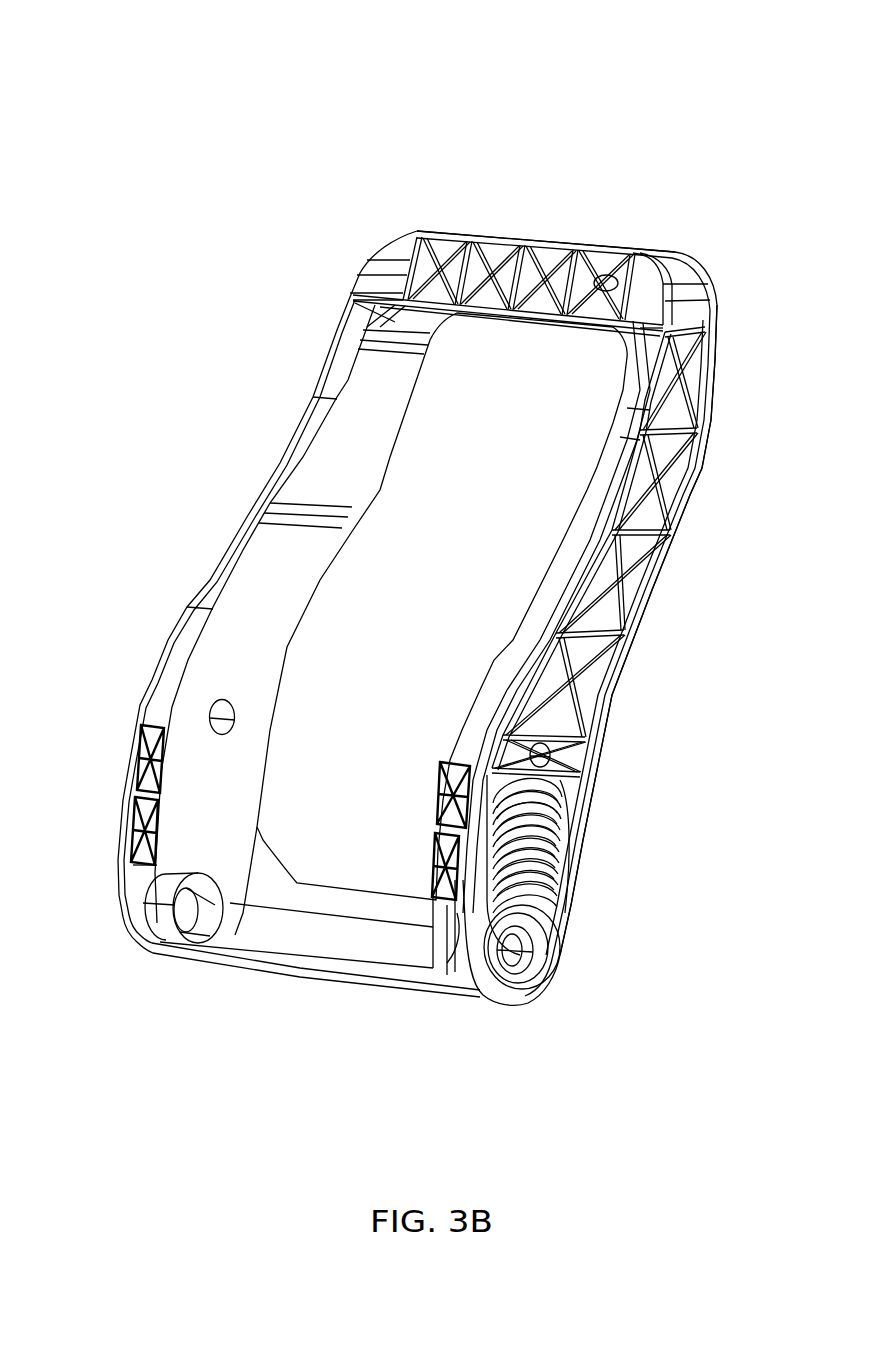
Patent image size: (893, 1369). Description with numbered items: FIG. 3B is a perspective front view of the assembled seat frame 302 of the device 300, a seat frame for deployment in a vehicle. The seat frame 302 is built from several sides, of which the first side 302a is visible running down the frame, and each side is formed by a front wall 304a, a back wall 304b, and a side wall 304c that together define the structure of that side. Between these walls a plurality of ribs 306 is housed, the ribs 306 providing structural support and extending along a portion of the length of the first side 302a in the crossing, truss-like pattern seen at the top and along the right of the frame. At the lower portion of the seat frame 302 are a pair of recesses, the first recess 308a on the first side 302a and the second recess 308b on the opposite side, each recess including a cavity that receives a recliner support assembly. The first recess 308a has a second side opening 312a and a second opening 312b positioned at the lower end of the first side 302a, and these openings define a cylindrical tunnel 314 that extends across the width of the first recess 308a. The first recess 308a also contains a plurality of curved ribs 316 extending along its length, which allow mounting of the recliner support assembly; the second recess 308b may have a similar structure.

The device 300 is at (408, 80).
The seat frame 302 is at (470, 139).
The first side 302a is at (472, 695).
The front wall 304a is at (595, 488).
The back wall 304b is at (690, 493).
The side wall 304c is at (603, 647).
The plurality of ribs 306 is at (693, 377).
The first recess 308a is at (560, 900).
The second recess 308b is at (138, 878).
The second side opening 312a is at (540, 963).
The second opening 312b is at (505, 963).
The cylindrical tunnel 314 is at (453, 945).
The plurality of curved ribs 316 is at (553, 831).